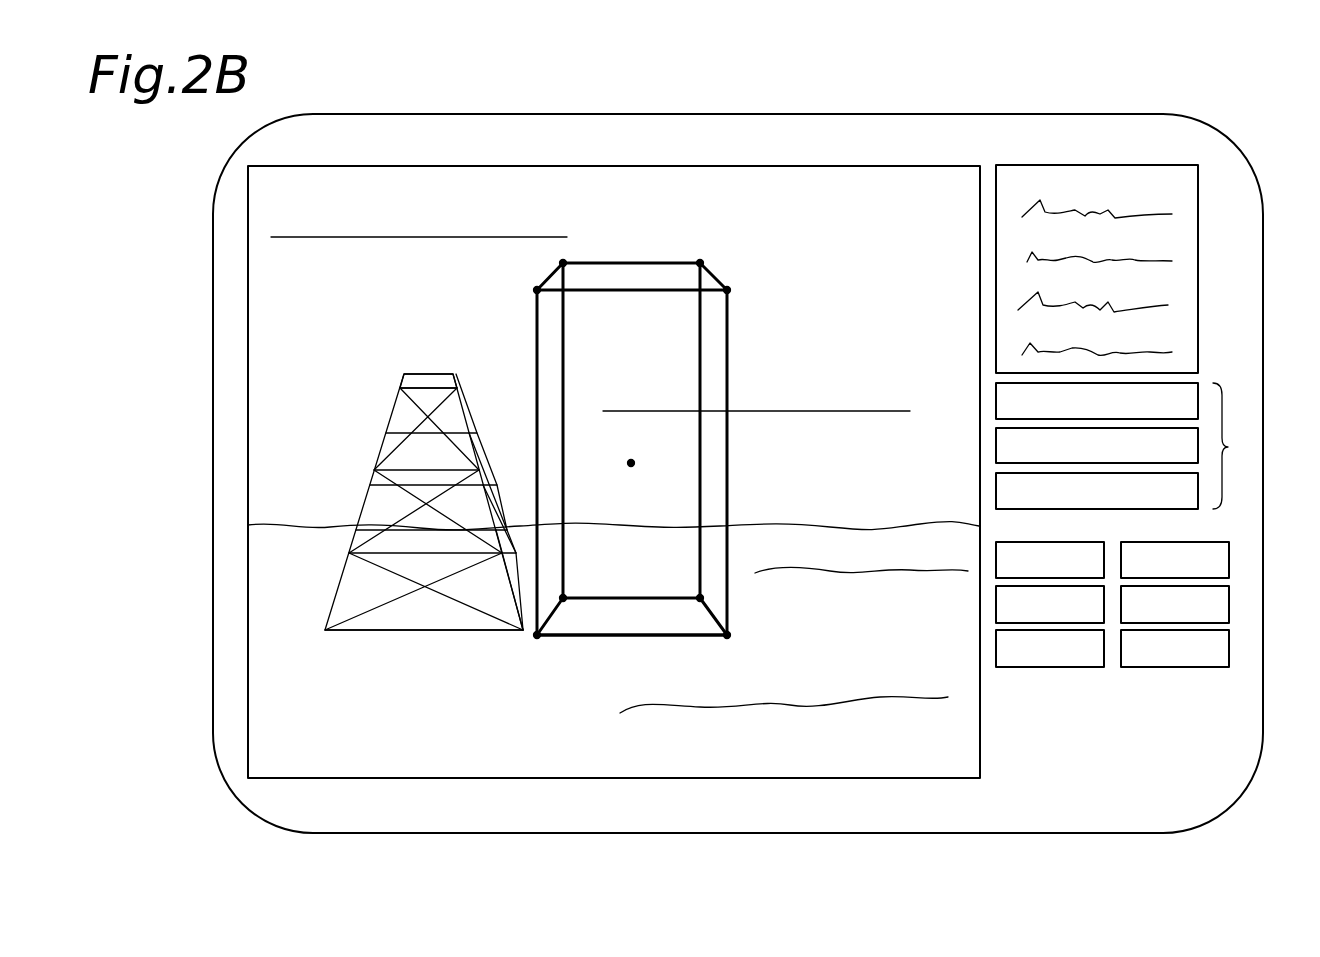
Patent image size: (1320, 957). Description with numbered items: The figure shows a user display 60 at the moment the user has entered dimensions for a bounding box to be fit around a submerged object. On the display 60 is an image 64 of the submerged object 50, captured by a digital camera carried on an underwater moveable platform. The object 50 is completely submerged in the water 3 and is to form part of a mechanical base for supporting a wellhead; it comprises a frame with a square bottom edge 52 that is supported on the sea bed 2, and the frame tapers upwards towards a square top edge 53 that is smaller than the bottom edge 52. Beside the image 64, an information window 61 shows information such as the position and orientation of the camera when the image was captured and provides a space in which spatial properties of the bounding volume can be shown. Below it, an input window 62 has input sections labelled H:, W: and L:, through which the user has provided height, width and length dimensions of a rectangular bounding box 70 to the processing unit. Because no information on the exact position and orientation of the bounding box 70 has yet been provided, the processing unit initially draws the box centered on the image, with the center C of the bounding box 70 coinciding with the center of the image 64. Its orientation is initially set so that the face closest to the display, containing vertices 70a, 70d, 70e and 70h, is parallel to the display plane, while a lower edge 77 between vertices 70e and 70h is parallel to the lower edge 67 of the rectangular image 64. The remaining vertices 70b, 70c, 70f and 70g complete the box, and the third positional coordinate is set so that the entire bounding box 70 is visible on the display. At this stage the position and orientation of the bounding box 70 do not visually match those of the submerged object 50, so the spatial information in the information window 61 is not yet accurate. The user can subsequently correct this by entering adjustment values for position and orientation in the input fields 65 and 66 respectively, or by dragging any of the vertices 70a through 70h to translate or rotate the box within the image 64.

The sea bed 2 is at (840, 629).
The water 3 is at (841, 375).
The submerged object 50 is at (410, 507).
The square bottom edge 52 is at (430, 632).
The square top edge 53 is at (433, 373).
The user display 60 is at (900, 114).
The information window 61 is at (1198, 276).
The input window 62 is at (1228, 447).
The image 64 is at (637, 166).
The input fields 65 is at (1053, 562).
The input fields 66 is at (1177, 562).
The lower edge 67 is at (661, 778).
The rectangular bounding box 70 is at (630, 448).
The vertex 70a is at (537, 290).
The vertex 70b is at (563, 262).
The vertex 70c is at (700, 262).
The vertex 70d is at (729, 290).
The vertex 70e is at (537, 637).
The vertex 70f is at (565, 597).
The vertex 70g is at (698, 597).
The vertex 70h is at (727, 637).
The lower edge 77 is at (635, 637).
The center C is at (637, 460).